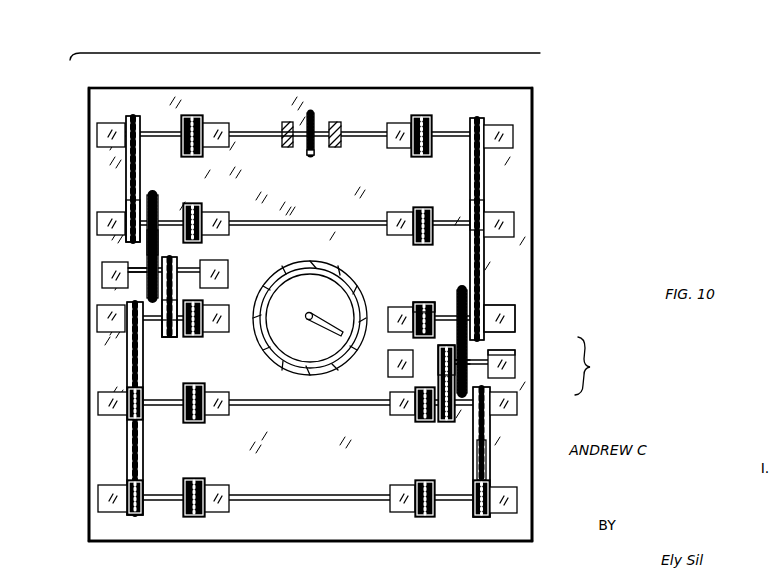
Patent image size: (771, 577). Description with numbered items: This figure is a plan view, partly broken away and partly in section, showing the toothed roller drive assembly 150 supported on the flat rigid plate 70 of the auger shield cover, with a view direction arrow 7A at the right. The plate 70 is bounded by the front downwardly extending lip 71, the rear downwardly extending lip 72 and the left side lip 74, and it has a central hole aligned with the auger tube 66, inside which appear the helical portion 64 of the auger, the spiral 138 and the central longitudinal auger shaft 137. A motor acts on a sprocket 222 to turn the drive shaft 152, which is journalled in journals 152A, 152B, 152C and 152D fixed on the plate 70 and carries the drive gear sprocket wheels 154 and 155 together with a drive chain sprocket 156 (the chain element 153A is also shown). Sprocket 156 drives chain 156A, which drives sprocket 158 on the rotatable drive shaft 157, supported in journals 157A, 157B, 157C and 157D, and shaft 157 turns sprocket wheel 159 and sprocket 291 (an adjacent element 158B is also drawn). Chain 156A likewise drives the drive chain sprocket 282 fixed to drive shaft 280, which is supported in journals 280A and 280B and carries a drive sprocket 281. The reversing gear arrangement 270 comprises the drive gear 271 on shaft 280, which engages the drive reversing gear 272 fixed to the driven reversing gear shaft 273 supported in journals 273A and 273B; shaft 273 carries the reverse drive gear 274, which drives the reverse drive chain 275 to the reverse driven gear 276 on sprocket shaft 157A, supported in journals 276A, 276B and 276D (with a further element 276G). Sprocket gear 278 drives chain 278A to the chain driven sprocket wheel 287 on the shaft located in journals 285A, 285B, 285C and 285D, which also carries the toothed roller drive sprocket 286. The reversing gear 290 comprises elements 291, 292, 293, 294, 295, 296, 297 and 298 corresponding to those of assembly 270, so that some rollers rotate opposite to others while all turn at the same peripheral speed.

The view direction arrow 7A is at (540, 244).
The helical portion of the auger 64 is at (296, 342).
The auger tube 66 is at (324, 269).
The flat rigid plate 70 is at (299, 108).
The front downwardly extending lip 71 is at (327, 100).
The rear downwardly extending lip 72 is at (215, 542).
The left side downwardly extending lip 74 is at (532, 182).
The central longitudinal auger shaft 137 is at (314, 311).
The spiral 138 is at (292, 297).
The toothed roller drive assembly 150 is at (305, 47).
The drive shaft 152 is at (358, 130).
The journal 152A is at (507, 130).
The journal 152B is at (402, 129).
The journal 152C is at (216, 129).
The journal 152D is at (113, 126).
The chain 153A is at (133, 115).
The drive gear sprocket wheel 154 is at (425, 114).
The drive chain sprocket wheel 155 is at (190, 114).
The drive chain sprocket 156 is at (480, 117).
The chain 156A is at (468, 205).
The rotatable drive shaft 157 is at (300, 220).
The sprocket shaft 157A is at (303, 406).
The journal 157B is at (396, 222).
The journal 157C is at (223, 220).
The journal 157D is at (97, 224).
The drive sprocket 158 is at (494, 213).
The sprocket 158B is at (125, 210).
The sprocket wheel 159 is at (423, 207).
The sprocket 222 is at (311, 154).
The reversing gear arrangement 270 is at (600, 366).
The drive gear 271 is at (461, 289).
The drive reversing gear 272 is at (512, 352).
The driven reversing gear shaft 273 is at (470, 362).
The journal 273A is at (505, 364).
The journal 273B is at (392, 365).
The reverse drive gear 274 is at (438, 352).
The reverse drive chain 275 is at (447, 423).
The reverse driven gear 276 is at (426, 423).
The journal 276A is at (505, 404).
The journal 276B is at (400, 407).
The journal 276D is at (110, 404).
The clutch 276G is at (222, 409).
The sprocket gear 278 is at (485, 420).
The chain 278A is at (486, 466).
The drive shaft 280 is at (442, 318).
The journal 280A is at (505, 322).
The journal 280B is at (406, 316).
The drive sprocket 281 is at (418, 302).
The drive chain sprocket 282 is at (490, 311).
The journal 285A is at (505, 498).
The journal 285B is at (401, 511).
The journal 285C is at (222, 506).
The journal 285D is at (110, 498).
The toothed roller drive sprocket 286 is at (432, 507).
The chain driven sprocket wheel 287 is at (484, 508).
The reversing gear 290 is at (147, 240).
The sprocket 291 is at (158, 206).
The drive reversing gear 292 is at (102, 269).
The driven reversing gear shaft 293 is at (143, 283).
The reverse drive gear 294 is at (170, 259).
The reverse drive chain 295 is at (176, 340).
The driven sprocket 296 is at (170, 337).
The sprocket gear 297 is at (200, 337).
The sprocket gear 298 is at (118, 333).